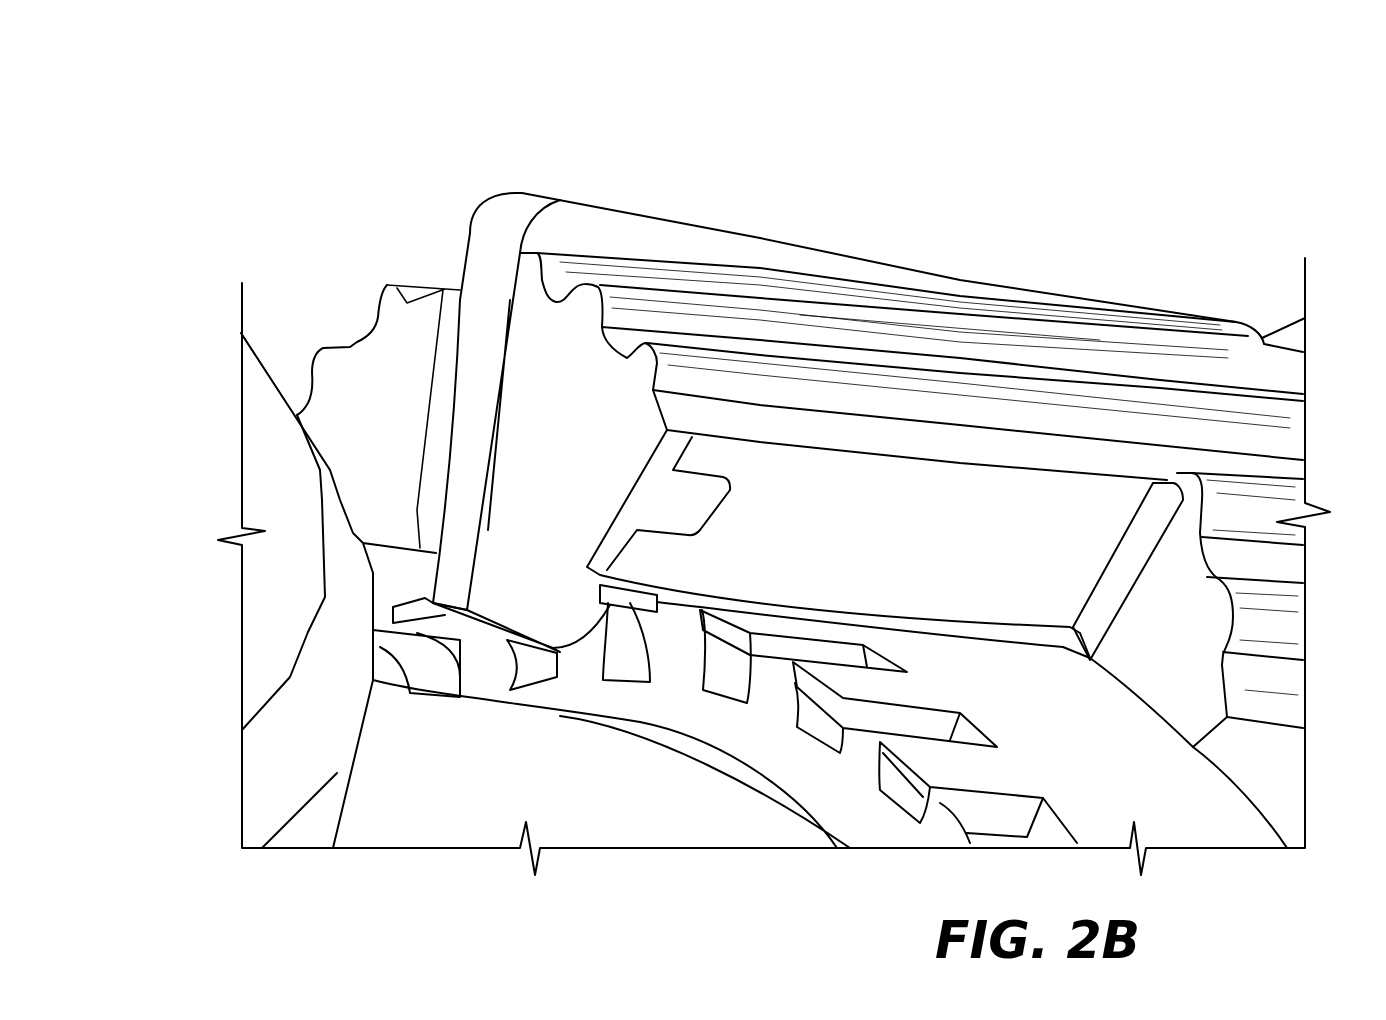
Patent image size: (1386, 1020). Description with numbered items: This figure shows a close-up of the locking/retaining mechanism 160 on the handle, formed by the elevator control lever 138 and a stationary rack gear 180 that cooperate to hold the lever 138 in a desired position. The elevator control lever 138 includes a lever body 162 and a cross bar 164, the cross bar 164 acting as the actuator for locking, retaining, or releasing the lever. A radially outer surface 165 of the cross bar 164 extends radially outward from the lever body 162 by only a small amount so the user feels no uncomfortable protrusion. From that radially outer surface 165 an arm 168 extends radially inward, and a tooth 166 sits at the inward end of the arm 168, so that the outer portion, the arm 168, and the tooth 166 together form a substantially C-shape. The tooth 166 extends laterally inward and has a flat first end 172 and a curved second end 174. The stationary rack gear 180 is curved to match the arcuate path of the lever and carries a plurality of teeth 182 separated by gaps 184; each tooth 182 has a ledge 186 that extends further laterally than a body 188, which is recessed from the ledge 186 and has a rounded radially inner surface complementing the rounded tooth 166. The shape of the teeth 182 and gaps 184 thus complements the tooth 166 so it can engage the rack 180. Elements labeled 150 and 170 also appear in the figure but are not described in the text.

The elevator control lever 138 is at (730, 182).
The housing 150 is at (373, 561).
The locking/retaining mechanism 160 is at (400, 184).
The lever body 162 is at (857, 327).
The cross bar 164 is at (585, 230).
The radially outer surface 165 is at (652, 213).
The tooth 166 is at (513, 587).
The arm 168 is at (473, 450).
The stop bar 170 is at (1046, 687).
The first end 172 is at (455, 583).
The second end 174 is at (613, 637).
The stationary rack gear 180 is at (1117, 745).
The teeth 182 is at (705, 600).
The gaps 184 is at (640, 660).
The ledge 186 is at (632, 600).
The body 188 is at (683, 663).